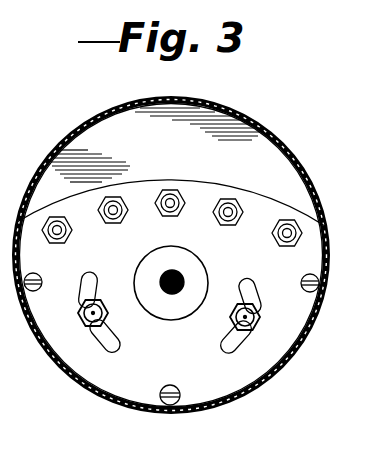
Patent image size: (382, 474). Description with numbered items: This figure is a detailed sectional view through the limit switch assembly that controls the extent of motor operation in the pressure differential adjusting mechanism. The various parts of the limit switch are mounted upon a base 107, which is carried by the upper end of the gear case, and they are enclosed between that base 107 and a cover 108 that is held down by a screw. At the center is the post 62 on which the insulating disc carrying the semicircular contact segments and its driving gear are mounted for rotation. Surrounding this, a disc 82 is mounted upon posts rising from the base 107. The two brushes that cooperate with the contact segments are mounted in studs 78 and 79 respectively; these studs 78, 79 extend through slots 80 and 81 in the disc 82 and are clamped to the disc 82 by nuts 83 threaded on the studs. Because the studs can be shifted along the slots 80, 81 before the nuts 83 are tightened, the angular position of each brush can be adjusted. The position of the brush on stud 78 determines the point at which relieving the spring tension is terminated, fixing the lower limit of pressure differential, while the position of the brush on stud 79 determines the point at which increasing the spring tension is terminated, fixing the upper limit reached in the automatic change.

The post 62 is at (171, 270).
The stud 78 is at (108, 317).
The stud 79 is at (232, 320).
The slot 80 is at (89, 280).
The slot 81 is at (247, 302).
The disc 82 is at (187, 368).
The nuts 83 is at (83, 327).
The base 107 is at (292, 191).
The cover 108 is at (295, 156).